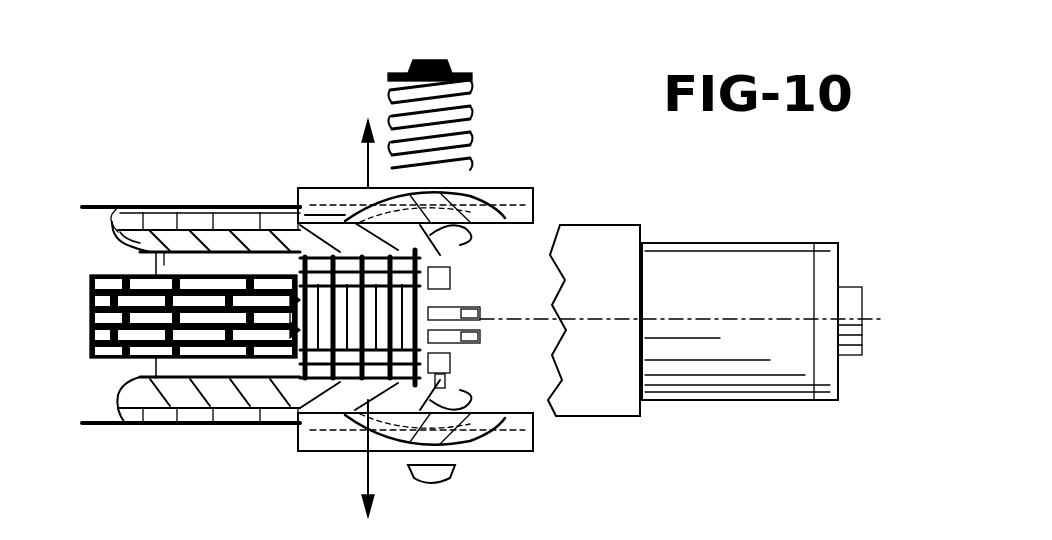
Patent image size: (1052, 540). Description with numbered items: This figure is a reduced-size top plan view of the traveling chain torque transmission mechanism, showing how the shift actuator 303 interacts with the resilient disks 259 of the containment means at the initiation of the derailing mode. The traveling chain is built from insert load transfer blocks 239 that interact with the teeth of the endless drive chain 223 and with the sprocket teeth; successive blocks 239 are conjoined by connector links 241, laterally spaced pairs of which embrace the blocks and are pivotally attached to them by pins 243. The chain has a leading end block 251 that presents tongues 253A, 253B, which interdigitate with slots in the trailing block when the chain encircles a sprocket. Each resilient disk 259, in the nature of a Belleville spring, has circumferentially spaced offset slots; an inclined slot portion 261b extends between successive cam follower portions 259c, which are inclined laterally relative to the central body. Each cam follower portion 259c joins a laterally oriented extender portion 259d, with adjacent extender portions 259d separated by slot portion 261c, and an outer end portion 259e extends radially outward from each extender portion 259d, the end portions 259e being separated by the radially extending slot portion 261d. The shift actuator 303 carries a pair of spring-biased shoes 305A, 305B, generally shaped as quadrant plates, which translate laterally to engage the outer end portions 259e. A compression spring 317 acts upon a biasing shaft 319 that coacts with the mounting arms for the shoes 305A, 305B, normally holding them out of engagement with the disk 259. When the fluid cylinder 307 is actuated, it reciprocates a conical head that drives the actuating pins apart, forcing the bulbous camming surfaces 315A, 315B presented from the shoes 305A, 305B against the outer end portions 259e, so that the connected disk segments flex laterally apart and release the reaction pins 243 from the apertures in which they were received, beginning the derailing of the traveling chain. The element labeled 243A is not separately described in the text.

The endless drive chain 223 is at (235, 425).
The insert load transfer block 239 is at (300, 400).
The connector link 241 is at (300, 364).
The pin 243 is at (360, 390).
The lever arm end 243A is at (458, 242).
The leading end block 251 is at (462, 352).
The tongue 253A is at (482, 338).
The tongue 253B is at (482, 310).
The resilient disk 259 is at (138, 188).
The cam follower portion 259c is at (135, 393).
The extender portion 259d is at (150, 425).
The outer end portion 259e is at (92, 426).
The slot portion 261b is at (132, 245).
The slot portion 261c is at (118, 210).
The slot portion 261d is at (250, 205).
The shift actuator 303 is at (565, 205).
The shoe 305A is at (365, 195).
The shoe 305B is at (520, 450).
The fluid cylinder 307 is at (710, 270).
The camming surface 315A is at (360, 190).
The camming surface 315B is at (355, 412).
The compression spring 317 is at (470, 130).
The biasing shaft 319 is at (450, 72).